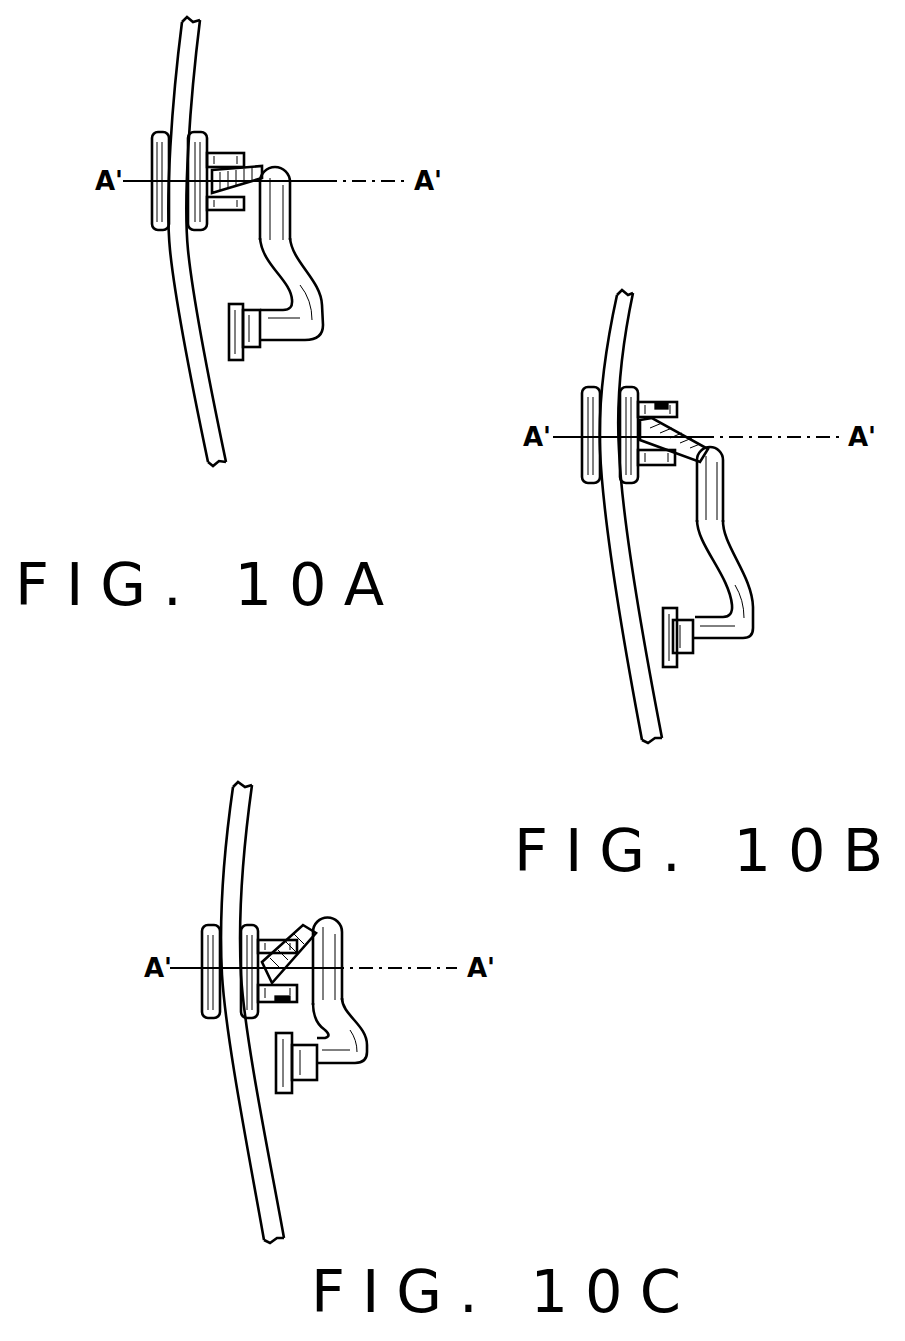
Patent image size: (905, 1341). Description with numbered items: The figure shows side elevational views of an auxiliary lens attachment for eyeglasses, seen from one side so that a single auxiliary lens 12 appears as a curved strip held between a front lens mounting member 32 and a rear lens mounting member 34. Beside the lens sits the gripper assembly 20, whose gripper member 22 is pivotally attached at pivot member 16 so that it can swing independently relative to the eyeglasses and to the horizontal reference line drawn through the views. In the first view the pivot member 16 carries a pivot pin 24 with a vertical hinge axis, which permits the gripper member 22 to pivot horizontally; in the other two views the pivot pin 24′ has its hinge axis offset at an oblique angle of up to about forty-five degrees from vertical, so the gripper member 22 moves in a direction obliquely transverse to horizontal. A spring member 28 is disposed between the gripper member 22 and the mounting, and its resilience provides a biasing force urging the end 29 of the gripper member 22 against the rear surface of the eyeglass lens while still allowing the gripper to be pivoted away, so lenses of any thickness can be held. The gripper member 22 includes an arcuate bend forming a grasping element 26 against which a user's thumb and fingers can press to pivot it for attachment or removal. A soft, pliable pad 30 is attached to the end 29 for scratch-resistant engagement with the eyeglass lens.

In FIG. 10A, the auxiliary lens 12 is at (170, 88).
In FIG. 10B, the auxiliary lens 12 is at (603, 348).
In FIG. 10C, the auxiliary lens 12 is at (227, 830).
In FIG. 10A, the pivot member 16 is at (240, 157).
In FIG. 10B, the pivot member 16 is at (678, 410).
In FIG. 10C, the pivot member 16 is at (270, 940).
In FIG. 10A, the gripper assembly 20 is at (334, 146).
In FIG. 10B, the gripper assembly 20 is at (723, 331).
In FIG. 10C, the gripper assembly 20 is at (350, 828).
In FIG. 10A, the gripper member 22 is at (279, 177).
In FIG. 10B, the gripper member 22 is at (714, 460).
In FIG. 10C, the gripper member 22 is at (328, 927).
In FIG. 10B, the pivot pin 24′ is at (663, 403).
In FIG. 10C, the pivot pin 24 is at (274, 1002).
In FIG. 10A, the grasping element 26 is at (277, 223).
In FIG. 10B, the grasping element 26 is at (714, 547).
In FIG. 10C, the grasping element 26 is at (331, 982).
In FIG. 10A, the spring member 28 is at (228, 212).
In FIG. 10B, the spring member 28 is at (708, 444).
In FIG. 10C, the spring member 28 is at (308, 953).
In FIG. 10A, the end of gripper member 29 is at (267, 333).
In FIG. 10B, the end of gripper member 29 is at (700, 637).
In FIG. 10C, the end of gripper member 29 is at (317, 1067).
In FIG. 10A, the pad 30 is at (243, 360).
In FIG. 10B, the pad 30 is at (677, 667).
In FIG. 10C, the pad 30 is at (288, 1093).
In FIG. 10A, the front lens mounting member 32 is at (160, 232).
In FIG. 10B, the front lens mounting member 32 is at (592, 490).
In FIG. 10C, the front lens mounting member 32 is at (203, 1013).
In FIG. 10A, the rear lens mounting member 34 is at (196, 140).
In FIG. 10B, the rear lens mounting member 34 is at (632, 388).
In FIG. 10C, the rear lens mounting member 34 is at (250, 920).